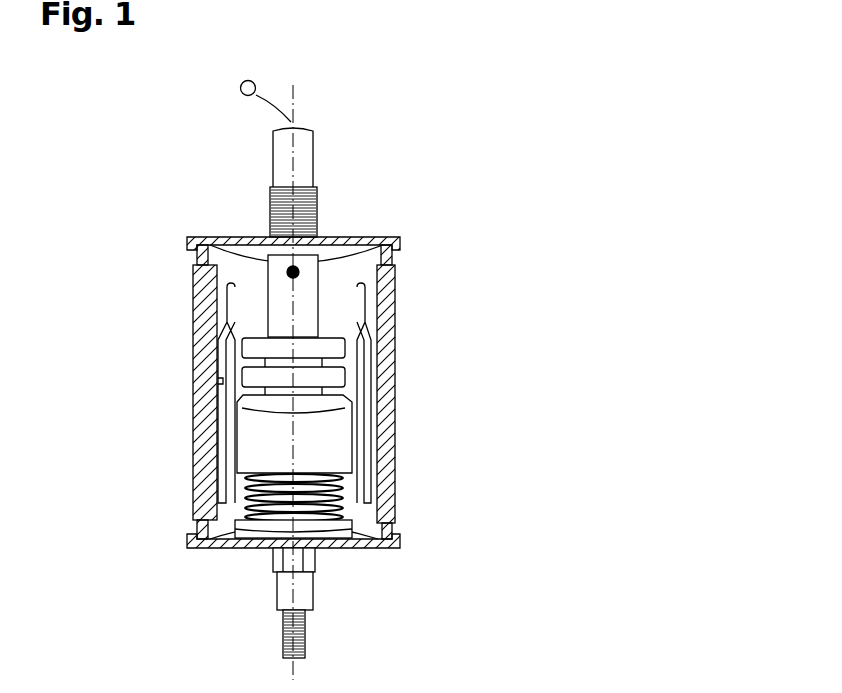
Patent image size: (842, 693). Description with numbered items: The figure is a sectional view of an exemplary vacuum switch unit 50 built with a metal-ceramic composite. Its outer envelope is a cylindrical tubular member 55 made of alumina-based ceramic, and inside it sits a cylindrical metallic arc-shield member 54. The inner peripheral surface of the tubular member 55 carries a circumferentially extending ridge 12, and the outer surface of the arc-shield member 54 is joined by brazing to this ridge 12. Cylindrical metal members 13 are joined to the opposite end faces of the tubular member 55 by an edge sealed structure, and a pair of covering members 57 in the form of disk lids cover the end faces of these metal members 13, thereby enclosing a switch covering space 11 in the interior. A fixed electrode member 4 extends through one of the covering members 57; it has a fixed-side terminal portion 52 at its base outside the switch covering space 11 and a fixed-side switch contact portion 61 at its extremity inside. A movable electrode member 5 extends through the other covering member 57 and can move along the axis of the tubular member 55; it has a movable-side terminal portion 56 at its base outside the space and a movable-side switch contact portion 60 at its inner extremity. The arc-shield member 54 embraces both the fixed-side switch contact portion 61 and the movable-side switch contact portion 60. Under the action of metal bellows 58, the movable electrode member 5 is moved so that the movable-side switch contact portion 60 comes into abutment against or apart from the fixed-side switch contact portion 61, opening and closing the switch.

The vacuum switch unit 50 is at (351, 126).
The fixed-side terminal portion 52 is at (316, 213).
The cylindrical metal member 13 is at (392, 262).
The covering member 57 is at (208, 250).
The switch covering space 11 is at (237, 272).
The ridge 12 is at (388, 440).
The arc-shield member 54 is at (385, 358).
The tubular member 55 is at (385, 418).
The fixed electrode member 4 is at (333, 308).
The fixed-side switch contact portion 61 is at (238, 345).
The movable-side switch contact portion 60 is at (240, 377).
The movable electrode member 5 is at (240, 490).
The metal bellows 58 is at (237, 503).
The movable-side terminal portion 56 is at (298, 587).